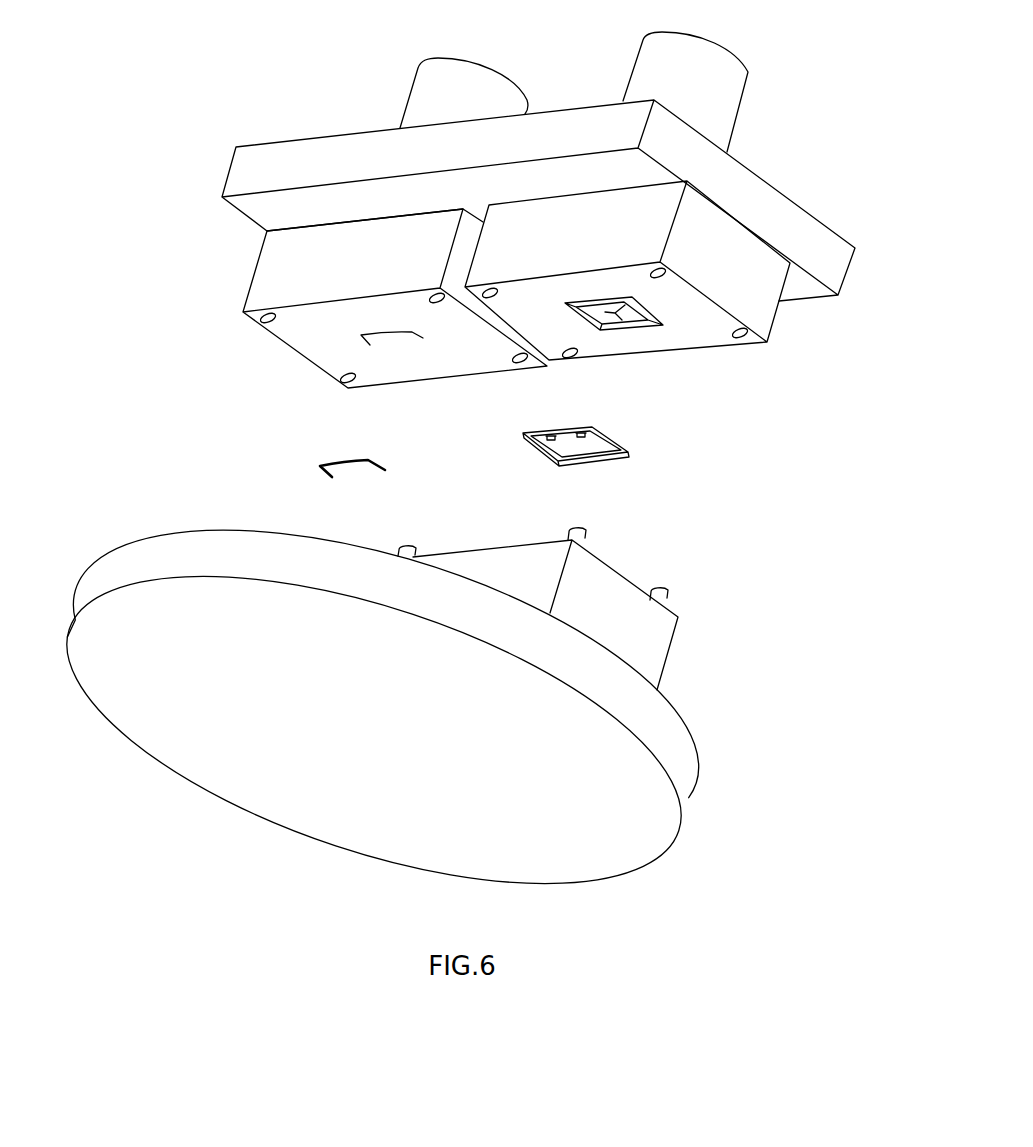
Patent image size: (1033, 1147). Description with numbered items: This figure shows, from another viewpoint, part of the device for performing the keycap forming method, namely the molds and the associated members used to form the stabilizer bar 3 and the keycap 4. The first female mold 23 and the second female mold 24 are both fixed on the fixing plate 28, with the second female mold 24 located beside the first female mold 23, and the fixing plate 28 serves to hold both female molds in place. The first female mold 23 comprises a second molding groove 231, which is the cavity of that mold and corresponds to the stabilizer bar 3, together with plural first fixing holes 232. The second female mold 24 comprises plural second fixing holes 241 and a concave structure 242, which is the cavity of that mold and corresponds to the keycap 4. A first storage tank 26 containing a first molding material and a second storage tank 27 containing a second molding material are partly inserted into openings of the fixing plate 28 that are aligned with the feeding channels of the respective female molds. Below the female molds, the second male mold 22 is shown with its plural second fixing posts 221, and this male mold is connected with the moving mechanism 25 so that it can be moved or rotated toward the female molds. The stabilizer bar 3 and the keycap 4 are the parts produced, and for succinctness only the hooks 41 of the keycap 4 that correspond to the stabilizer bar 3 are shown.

The second male mold 22 is at (573, 597).
The second fixing posts 221 is at (658, 590).
The first female mold 23 is at (374, 317).
The second molding groove 231 is at (388, 331).
The first fixing holes 232 is at (256, 322).
The second female mold 24 is at (648, 289).
The second fixing holes 241 is at (745, 344).
The concave structure 242 is at (628, 320).
The moving mechanism 25 is at (223, 540).
The first storage tank 26 is at (485, 92).
The second storage tank 27 is at (706, 66).
The fixing plate 28 is at (774, 201).
The stabilizer bar 3 is at (348, 448).
The keycap 4 is at (561, 440).
The hooks 41 is at (533, 443).